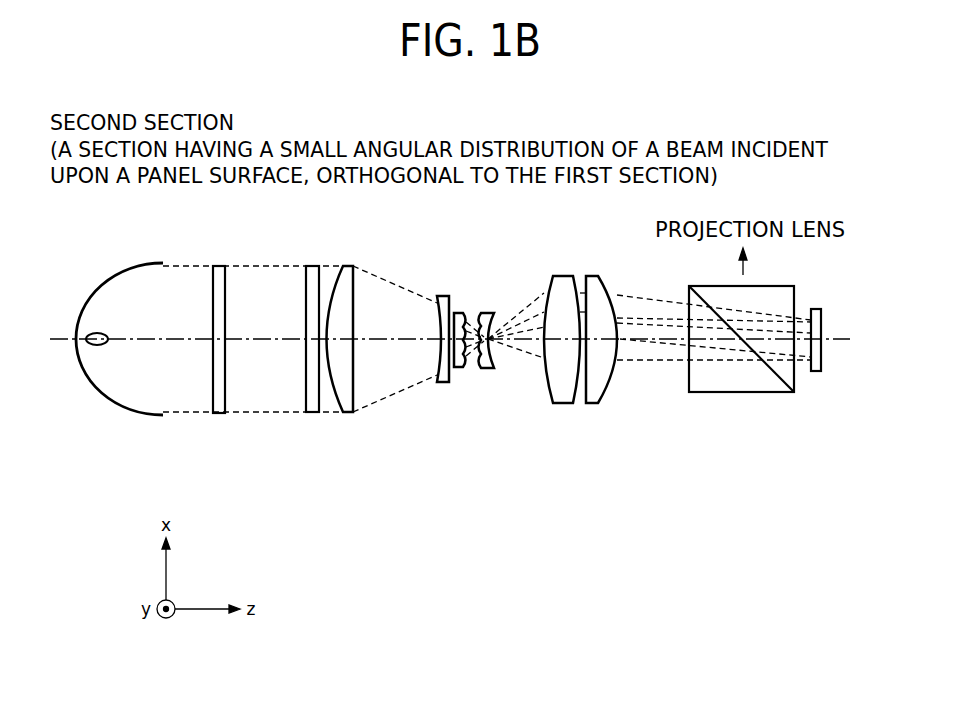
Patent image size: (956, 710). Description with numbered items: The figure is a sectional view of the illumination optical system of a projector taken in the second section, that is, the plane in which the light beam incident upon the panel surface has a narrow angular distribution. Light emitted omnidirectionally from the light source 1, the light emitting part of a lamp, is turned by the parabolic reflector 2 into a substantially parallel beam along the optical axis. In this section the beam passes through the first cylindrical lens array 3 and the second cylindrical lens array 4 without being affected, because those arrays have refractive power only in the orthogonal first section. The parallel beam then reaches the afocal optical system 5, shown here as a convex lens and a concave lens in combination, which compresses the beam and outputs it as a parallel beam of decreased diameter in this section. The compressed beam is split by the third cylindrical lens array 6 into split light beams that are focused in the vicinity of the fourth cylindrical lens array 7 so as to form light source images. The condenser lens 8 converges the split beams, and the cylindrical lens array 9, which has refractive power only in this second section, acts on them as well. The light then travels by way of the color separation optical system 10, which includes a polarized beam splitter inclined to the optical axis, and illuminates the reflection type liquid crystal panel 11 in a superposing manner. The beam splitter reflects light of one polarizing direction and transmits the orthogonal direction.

The light source 1 is at (103, 345).
The parabolic reflector 2 is at (140, 412).
The first cylindrical lens array 3 is at (220, 413).
The second cylindrical lens array 4 is at (312, 412).
The afocal optical system 5 is at (350, 412).
The third cylindrical lens array 6 is at (460, 368).
The fourth cylindrical lens array 7 is at (490, 368).
The condenser lens 8 is at (565, 403).
The cylindrical lens array 9 is at (594, 403).
The color separation optical system 10 is at (723, 393).
The reflection type liquid crystal panel 11 is at (818, 371).